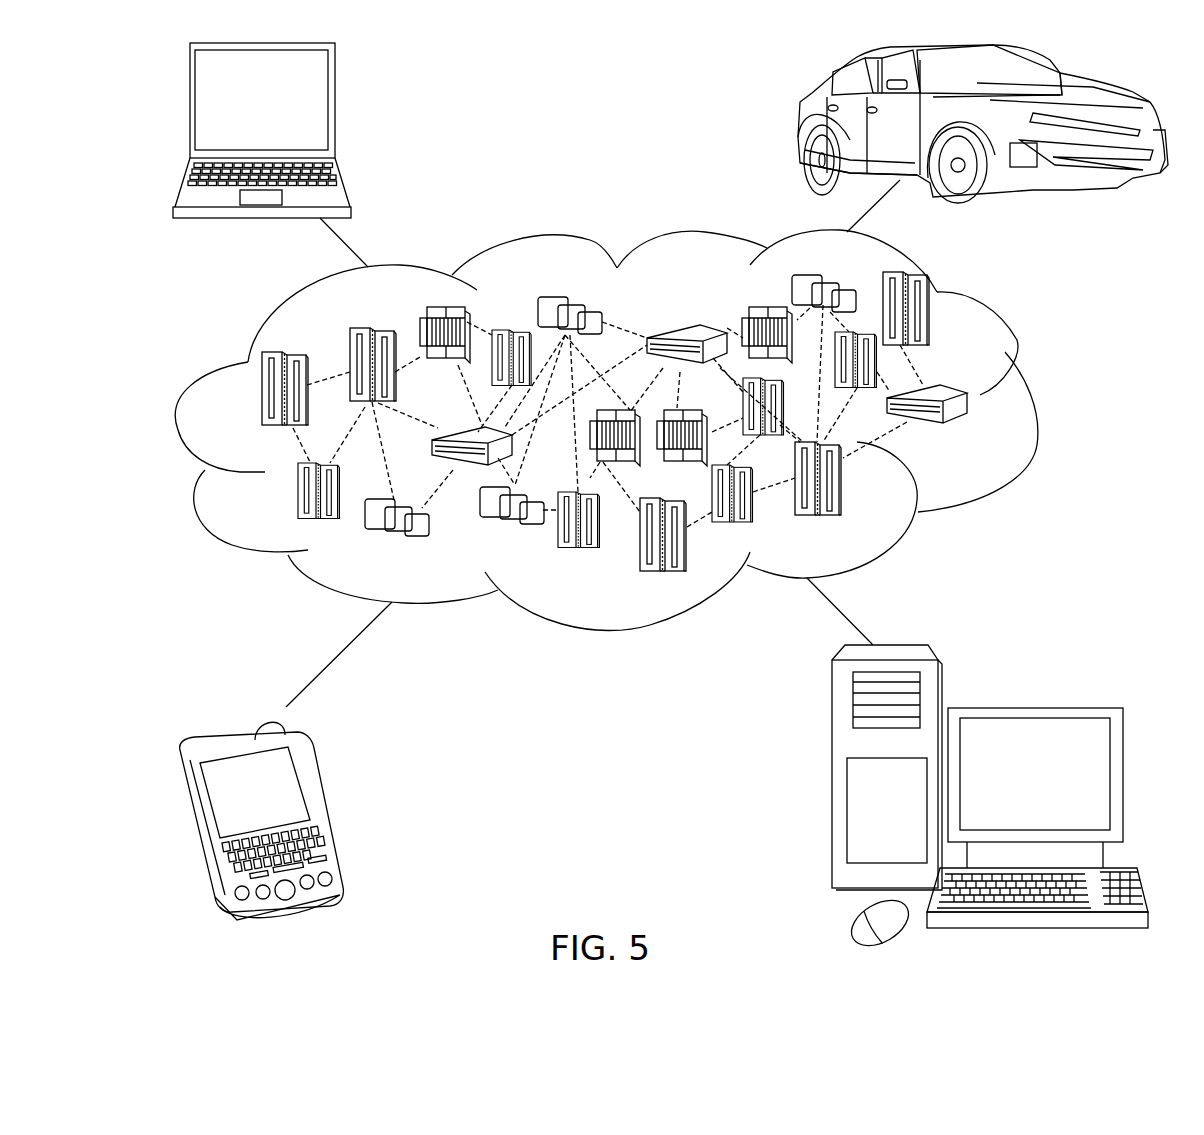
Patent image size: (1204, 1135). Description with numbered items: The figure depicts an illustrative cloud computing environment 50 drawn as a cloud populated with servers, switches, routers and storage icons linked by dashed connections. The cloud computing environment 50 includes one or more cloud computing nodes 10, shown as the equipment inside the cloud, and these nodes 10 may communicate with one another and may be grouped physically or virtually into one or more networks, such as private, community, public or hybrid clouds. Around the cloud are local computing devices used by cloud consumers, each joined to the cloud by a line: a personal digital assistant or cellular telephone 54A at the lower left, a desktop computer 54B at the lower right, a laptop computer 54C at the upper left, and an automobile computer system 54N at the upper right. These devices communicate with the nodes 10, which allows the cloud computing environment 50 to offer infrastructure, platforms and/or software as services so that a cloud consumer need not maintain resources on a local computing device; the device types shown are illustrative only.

The cloud computing node 10 is at (987, 438).
The cloud computing environment 50 is at (1037, 398).
The personal digital assistant (PDA) or cellular telephone 54A is at (323, 811).
The desktop computer 54B is at (1035, 708).
The laptop computer 54C is at (333, 110).
The automobile computer system 54N is at (800, 128).